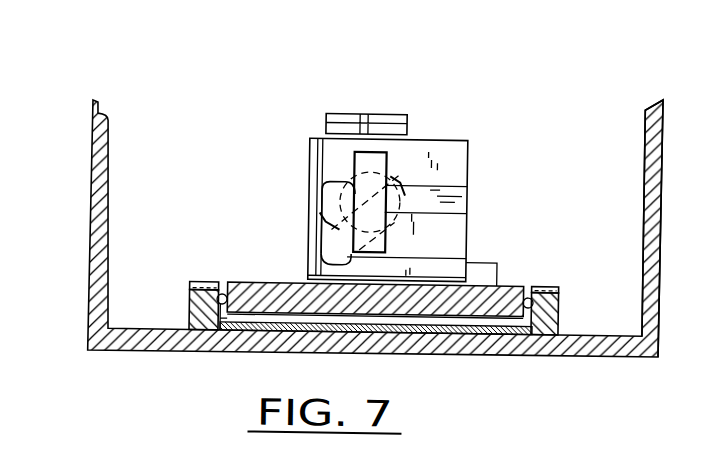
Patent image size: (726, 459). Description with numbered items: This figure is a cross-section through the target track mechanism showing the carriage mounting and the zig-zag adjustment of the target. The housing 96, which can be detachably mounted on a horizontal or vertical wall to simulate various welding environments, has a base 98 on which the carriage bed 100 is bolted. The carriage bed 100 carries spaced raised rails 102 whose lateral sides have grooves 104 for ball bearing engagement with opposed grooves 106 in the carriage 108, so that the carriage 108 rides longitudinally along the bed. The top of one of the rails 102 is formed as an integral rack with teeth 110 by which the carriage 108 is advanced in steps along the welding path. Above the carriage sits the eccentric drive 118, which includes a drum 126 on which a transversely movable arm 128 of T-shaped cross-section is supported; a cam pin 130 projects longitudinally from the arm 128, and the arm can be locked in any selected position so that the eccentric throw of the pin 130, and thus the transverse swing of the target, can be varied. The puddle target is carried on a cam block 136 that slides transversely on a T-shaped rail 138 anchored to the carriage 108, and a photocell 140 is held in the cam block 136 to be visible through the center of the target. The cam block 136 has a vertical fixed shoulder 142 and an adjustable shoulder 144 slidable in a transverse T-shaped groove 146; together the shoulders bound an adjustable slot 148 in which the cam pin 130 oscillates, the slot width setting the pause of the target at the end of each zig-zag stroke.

The housing 96 is at (659, 244).
The base 98 is at (578, 350).
The carriage bed 100 is at (287, 329).
The raised rails 102 is at (190, 310).
The grooves 104 is at (191, 288).
The opposed grooves 106 is at (517, 284).
The carriage 108 is at (292, 279).
The rack teeth 110 is at (207, 280).
The eccentric drive 118 is at (440, 155).
The drum 126 is at (400, 207).
The transversely movable arm 128 is at (318, 214).
The cam pin 130 is at (322, 235).
The cam block 136 is at (459, 230).
The T-shaped rail 138 is at (496, 257).
The photocell 140 is at (359, 109).
The fixed shoulder 142 is at (315, 135).
The adjustable shoulder 144 is at (385, 156).
The T-shaped groove 146 is at (456, 192).
The slot 148 is at (330, 154).